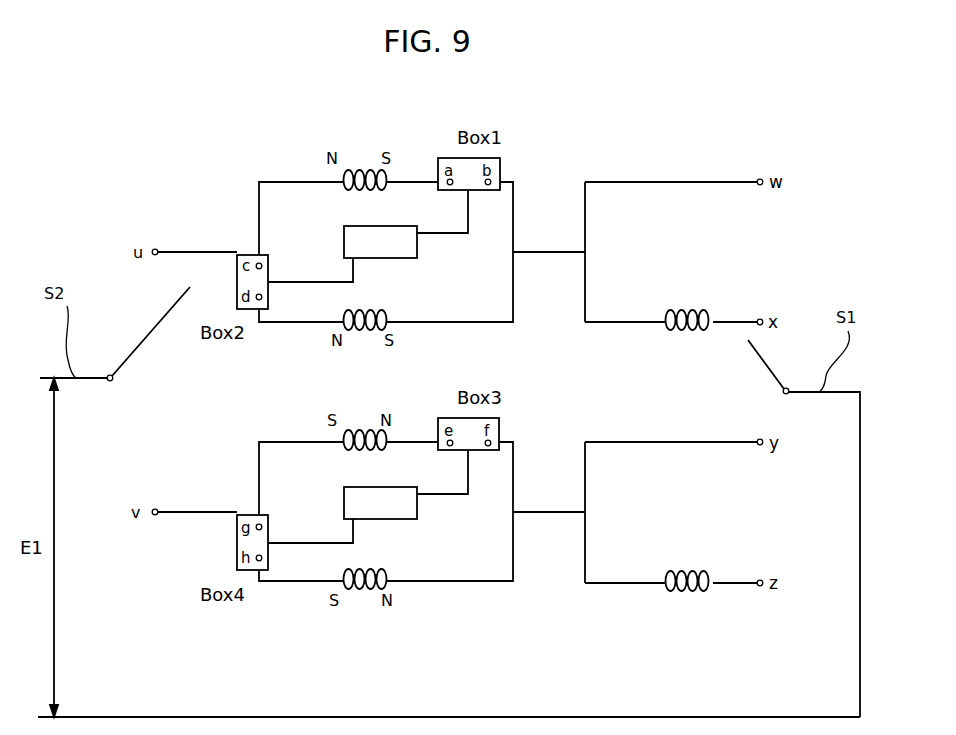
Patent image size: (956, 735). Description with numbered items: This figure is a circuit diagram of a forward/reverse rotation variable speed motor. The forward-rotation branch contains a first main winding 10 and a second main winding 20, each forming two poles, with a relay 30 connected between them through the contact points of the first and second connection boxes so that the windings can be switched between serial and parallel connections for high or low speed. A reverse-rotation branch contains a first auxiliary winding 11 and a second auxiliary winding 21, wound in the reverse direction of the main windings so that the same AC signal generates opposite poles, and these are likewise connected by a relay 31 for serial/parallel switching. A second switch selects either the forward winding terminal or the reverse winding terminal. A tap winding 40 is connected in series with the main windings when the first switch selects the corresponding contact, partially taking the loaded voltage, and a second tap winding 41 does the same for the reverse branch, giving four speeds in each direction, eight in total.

The first main winding 10 is at (363, 172).
The first auxiliary winding 11 is at (357, 430).
The second main winding 20 is at (358, 331).
The second auxiliary winding 21 is at (373, 590).
The relay 30 is at (417, 243).
The relay 31 is at (417, 504).
The tap winding 40 is at (688, 333).
The second tap winding 41 is at (688, 597).